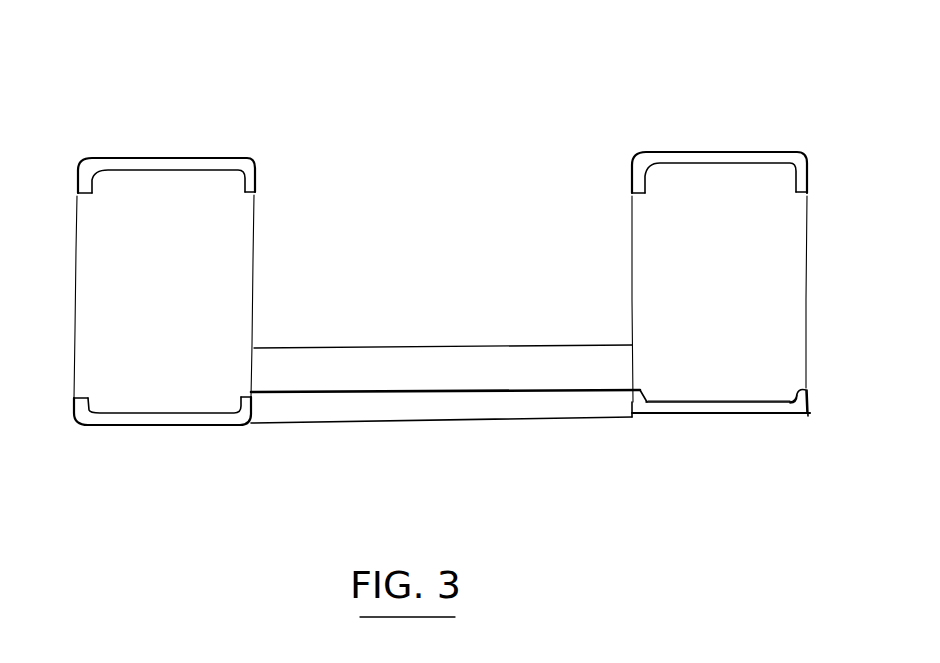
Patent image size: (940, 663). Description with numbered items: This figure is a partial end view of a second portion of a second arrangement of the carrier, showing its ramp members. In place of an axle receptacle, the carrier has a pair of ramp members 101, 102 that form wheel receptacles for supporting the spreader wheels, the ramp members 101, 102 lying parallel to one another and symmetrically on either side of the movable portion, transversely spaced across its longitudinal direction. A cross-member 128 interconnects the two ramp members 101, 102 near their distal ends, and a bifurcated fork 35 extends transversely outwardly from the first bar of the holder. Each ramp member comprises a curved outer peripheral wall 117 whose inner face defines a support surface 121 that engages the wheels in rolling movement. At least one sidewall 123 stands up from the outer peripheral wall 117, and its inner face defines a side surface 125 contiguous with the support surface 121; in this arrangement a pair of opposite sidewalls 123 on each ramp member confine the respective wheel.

The ramp member 101 is at (175, 152).
The ramp member 102 is at (723, 149).
The bifurcated fork 35 is at (532, 346).
The cross-member 128 is at (311, 412).
The curved outer peripheral wall 117 is at (703, 413).
The support surface 121 is at (728, 398).
The side surface 125 is at (800, 390).
The sidewall 123 is at (633, 410).